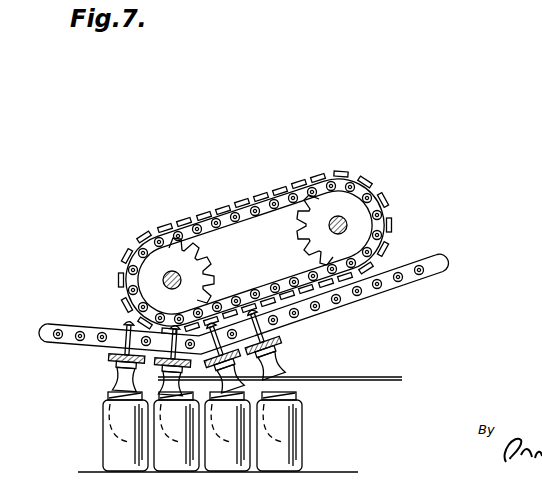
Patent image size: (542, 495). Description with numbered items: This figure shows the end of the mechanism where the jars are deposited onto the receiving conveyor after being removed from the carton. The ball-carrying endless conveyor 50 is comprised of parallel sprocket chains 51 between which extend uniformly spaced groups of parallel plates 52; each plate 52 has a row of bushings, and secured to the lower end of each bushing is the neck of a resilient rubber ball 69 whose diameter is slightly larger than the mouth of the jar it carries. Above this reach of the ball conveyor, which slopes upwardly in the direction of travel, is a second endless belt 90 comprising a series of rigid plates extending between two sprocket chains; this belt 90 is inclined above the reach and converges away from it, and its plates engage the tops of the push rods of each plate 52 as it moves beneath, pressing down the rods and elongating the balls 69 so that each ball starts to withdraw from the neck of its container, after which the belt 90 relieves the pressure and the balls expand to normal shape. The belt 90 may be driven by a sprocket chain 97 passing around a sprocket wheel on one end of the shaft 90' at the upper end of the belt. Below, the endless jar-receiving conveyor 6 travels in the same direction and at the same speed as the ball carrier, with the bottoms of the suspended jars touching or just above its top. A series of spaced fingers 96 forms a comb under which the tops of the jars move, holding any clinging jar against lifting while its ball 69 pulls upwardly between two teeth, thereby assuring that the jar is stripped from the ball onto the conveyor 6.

The jar-receiving conveyor 6 is at (331, 472).
The endless conveyor 50 is at (243, 289).
The sprocket chains 51 is at (413, 276).
The ball-carrying plates 52 is at (111, 359).
The resilient rubber ball 69 is at (118, 377).
The endless belt 90 is at (255, 241).
The shaft 90' is at (350, 206).
The fingers 96 is at (355, 378).
The sprocket chain 97 is at (218, 222).